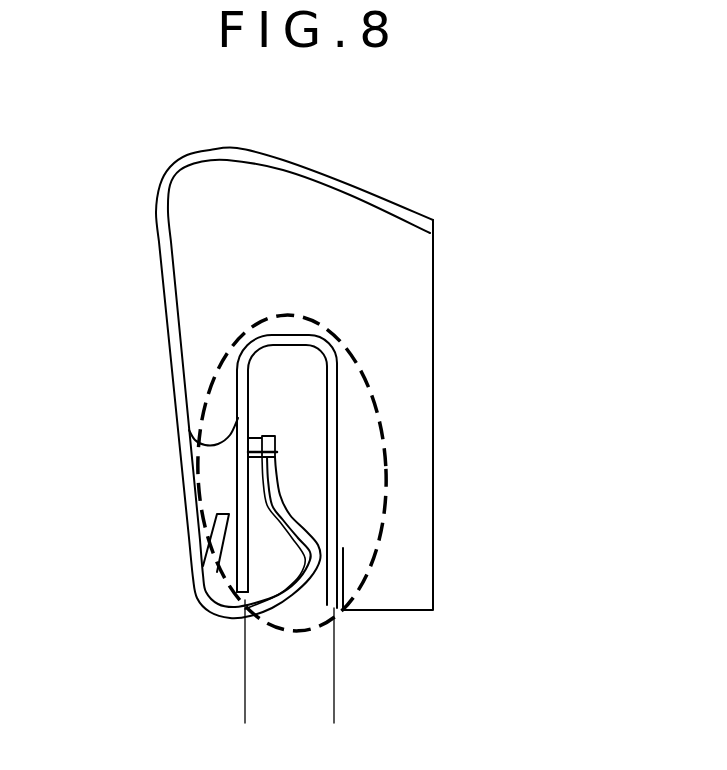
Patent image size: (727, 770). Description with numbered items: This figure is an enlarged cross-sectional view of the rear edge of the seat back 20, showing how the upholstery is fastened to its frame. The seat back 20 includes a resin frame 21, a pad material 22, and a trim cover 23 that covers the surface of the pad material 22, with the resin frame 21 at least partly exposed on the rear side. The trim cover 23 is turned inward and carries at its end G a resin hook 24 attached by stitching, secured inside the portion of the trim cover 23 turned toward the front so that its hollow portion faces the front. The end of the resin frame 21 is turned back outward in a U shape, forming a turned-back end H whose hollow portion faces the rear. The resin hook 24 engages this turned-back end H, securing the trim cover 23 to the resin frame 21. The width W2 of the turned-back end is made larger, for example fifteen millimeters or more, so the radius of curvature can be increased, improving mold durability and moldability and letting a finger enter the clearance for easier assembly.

The seat back 20 is at (320, 118).
The resin frame 21 is at (343, 550).
The pad material 22 is at (417, 440).
The trim cover 23 is at (157, 229).
The resin hook 24 is at (217, 516).
The end of the trim cover G is at (277, 451).
The turned-back end of the resin frame H is at (383, 497).
The width of the turned-back end W2 is at (185, 700).